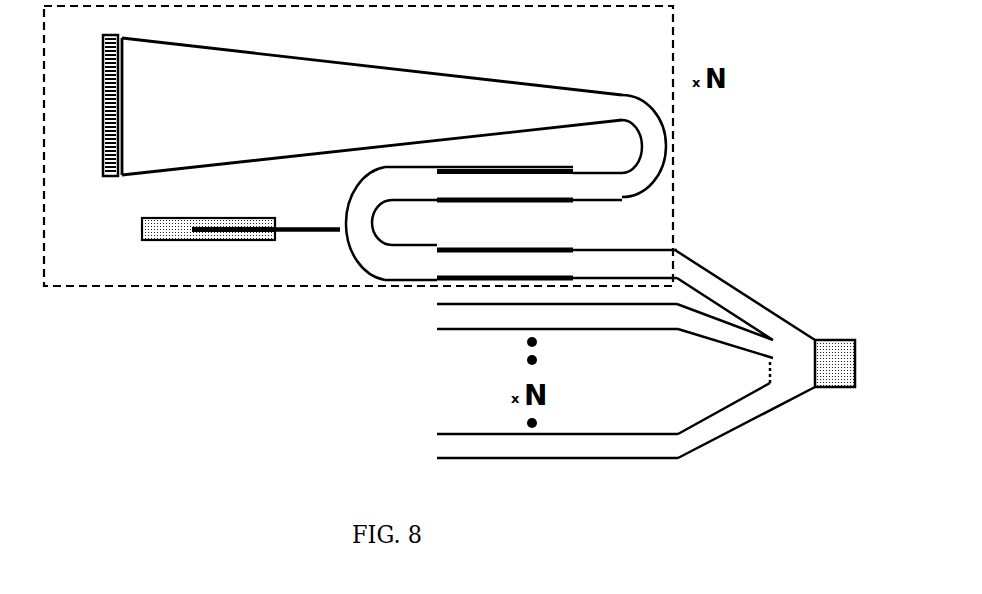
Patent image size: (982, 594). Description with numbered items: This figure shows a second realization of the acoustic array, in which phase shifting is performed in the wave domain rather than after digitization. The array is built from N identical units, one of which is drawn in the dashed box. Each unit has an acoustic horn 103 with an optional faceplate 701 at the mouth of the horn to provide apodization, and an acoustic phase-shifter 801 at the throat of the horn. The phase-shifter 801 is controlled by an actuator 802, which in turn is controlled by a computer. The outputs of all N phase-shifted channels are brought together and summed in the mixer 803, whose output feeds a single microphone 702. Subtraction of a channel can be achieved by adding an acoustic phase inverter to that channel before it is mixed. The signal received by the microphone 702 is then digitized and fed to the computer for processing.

The faceplate 701 is at (85, 105).
The acoustic horn 103 is at (372, 106).
The acoustic phase-shifter 801 is at (347, 223).
The actuator 802 is at (219, 228).
The mixer 803 is at (745, 354).
The microphone 702 is at (836, 382).